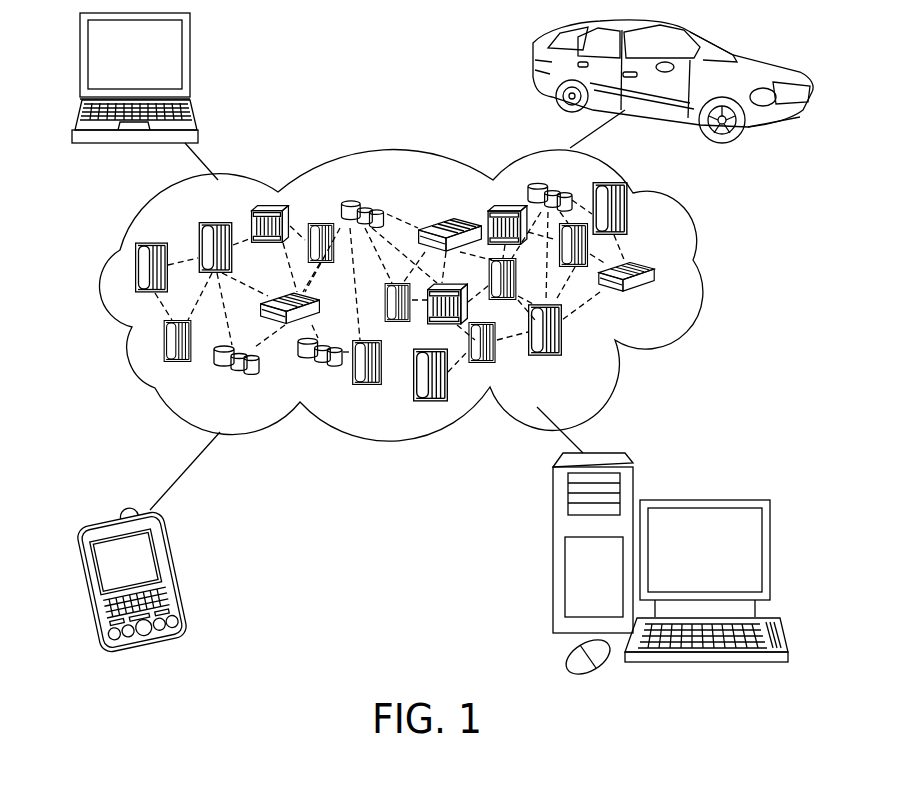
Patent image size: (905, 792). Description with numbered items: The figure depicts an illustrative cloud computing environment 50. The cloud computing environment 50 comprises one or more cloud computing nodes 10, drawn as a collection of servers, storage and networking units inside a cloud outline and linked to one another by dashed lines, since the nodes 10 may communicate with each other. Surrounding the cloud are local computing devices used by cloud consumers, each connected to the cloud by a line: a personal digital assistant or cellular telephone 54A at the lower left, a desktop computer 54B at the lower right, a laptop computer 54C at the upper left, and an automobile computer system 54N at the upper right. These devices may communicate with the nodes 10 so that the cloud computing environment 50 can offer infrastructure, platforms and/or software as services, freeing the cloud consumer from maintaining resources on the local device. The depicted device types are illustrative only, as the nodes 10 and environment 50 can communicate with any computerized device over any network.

The cloud computing nodes 10 is at (442, 347).
The cloud computing environment 50 is at (705, 273).
The personal digital assistant (PDA) or cellular telephone 54A is at (183, 570).
The desktop computer 54B is at (702, 498).
The laptop computer 54C is at (190, 63).
The automobile computer system 54N is at (530, 78).